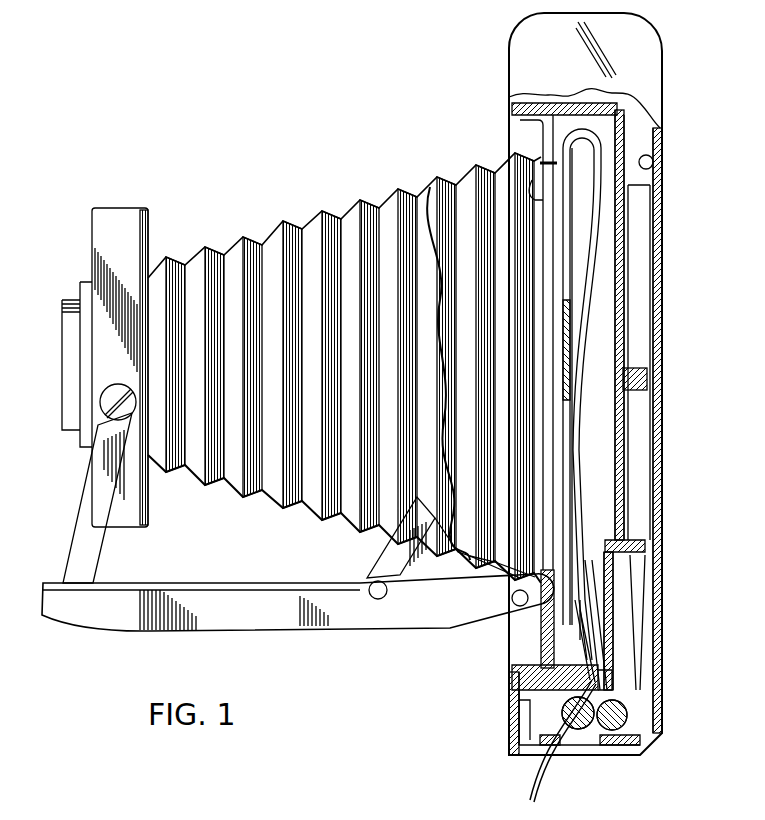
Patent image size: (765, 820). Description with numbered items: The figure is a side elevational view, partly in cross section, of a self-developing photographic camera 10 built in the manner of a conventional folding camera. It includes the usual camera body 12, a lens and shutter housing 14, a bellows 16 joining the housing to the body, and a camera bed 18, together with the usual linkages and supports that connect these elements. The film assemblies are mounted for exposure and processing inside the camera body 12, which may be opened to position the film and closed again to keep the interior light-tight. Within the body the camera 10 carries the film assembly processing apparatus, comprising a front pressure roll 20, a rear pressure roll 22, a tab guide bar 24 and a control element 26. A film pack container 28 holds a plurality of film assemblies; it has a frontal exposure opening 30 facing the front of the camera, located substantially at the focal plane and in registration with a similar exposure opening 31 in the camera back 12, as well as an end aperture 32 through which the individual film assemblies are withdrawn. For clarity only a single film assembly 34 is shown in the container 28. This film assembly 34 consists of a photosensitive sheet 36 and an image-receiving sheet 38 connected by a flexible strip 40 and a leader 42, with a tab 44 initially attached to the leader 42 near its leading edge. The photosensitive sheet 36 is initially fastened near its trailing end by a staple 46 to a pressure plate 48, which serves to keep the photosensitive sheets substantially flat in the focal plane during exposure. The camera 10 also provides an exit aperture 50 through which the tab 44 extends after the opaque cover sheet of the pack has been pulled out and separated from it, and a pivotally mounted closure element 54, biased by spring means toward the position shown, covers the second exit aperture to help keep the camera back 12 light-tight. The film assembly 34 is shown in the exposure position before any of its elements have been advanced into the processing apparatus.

The photographic camera 10 is at (405, 178).
The camera body 12 is at (522, 62).
The lens and shutter housing 14 is at (133, 224).
The bellows 16 is at (358, 207).
The camera bed 18 is at (290, 624).
The front pressure roll 20 is at (575, 730).
The rear pressure roll 22 is at (628, 714).
The tab guide bar 24 is at (548, 697).
The control element 26 is at (600, 575).
The container 28 is at (586, 673).
The frontal exposure opening 30 is at (518, 578).
The exposure opening 31 is at (520, 590).
The end aperture 32 is at (602, 672).
The film assembly 34 is at (600, 471).
The photosensitive sheet 36 is at (538, 162).
The image-receiving sheet 38 is at (578, 247).
The flexible strip 40 is at (582, 432).
The leader 42 is at (580, 290).
The tab 44 is at (528, 792).
The staple 46 is at (576, 640).
The pressure plate 48 is at (577, 622).
The exit aperture 50 is at (536, 756).
The closure element 54 is at (592, 755).